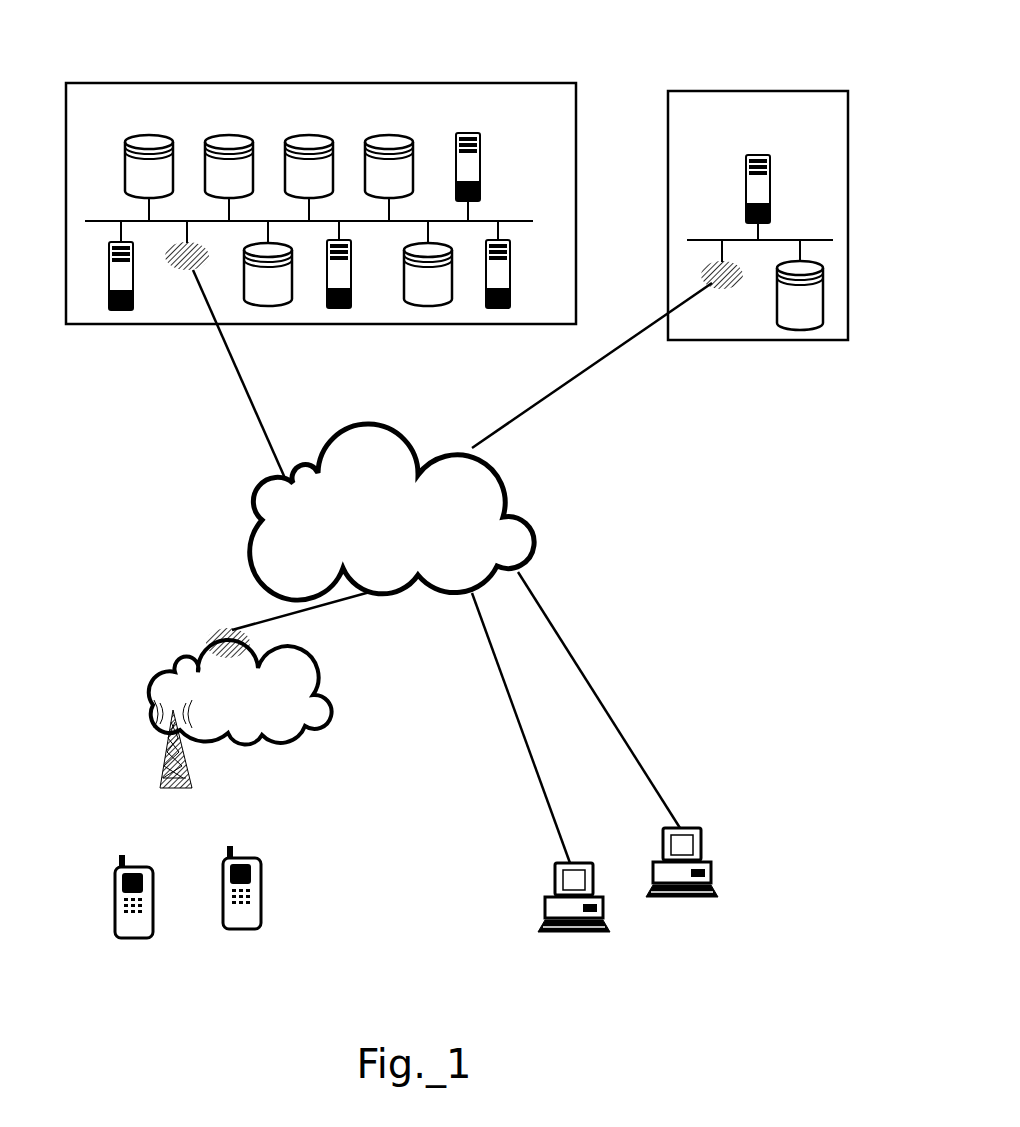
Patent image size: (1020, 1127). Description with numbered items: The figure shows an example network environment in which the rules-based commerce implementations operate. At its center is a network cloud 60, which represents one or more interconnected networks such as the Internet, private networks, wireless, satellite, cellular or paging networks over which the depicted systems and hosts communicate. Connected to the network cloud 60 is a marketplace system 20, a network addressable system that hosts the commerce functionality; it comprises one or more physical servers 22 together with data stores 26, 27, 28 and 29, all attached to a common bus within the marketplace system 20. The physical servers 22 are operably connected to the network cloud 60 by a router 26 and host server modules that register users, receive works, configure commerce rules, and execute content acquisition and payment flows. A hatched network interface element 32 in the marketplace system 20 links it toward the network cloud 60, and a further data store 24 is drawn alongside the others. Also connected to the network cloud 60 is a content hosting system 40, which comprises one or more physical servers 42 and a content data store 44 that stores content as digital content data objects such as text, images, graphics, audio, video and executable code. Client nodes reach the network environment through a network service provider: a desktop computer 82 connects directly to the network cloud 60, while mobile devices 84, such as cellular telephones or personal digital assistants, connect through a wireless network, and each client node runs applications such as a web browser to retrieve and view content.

The marketplace system 20 is at (575, 142).
The physical server 22 is at (107, 272).
The database 24 is at (125, 165).
The data store 26 is at (205, 165).
The data store 27 is at (285, 165).
The data store 28 is at (413, 165).
The data store 29 is at (453, 276).
The network interface 32 is at (172, 258).
The content hosting system 40 is at (805, 91).
The physical server 42 is at (770, 188).
The content data store 44 is at (823, 298).
The network cloud 60 is at (241, 523).
The desktop computer 82 is at (541, 897).
The mobile device 84 is at (112, 898).